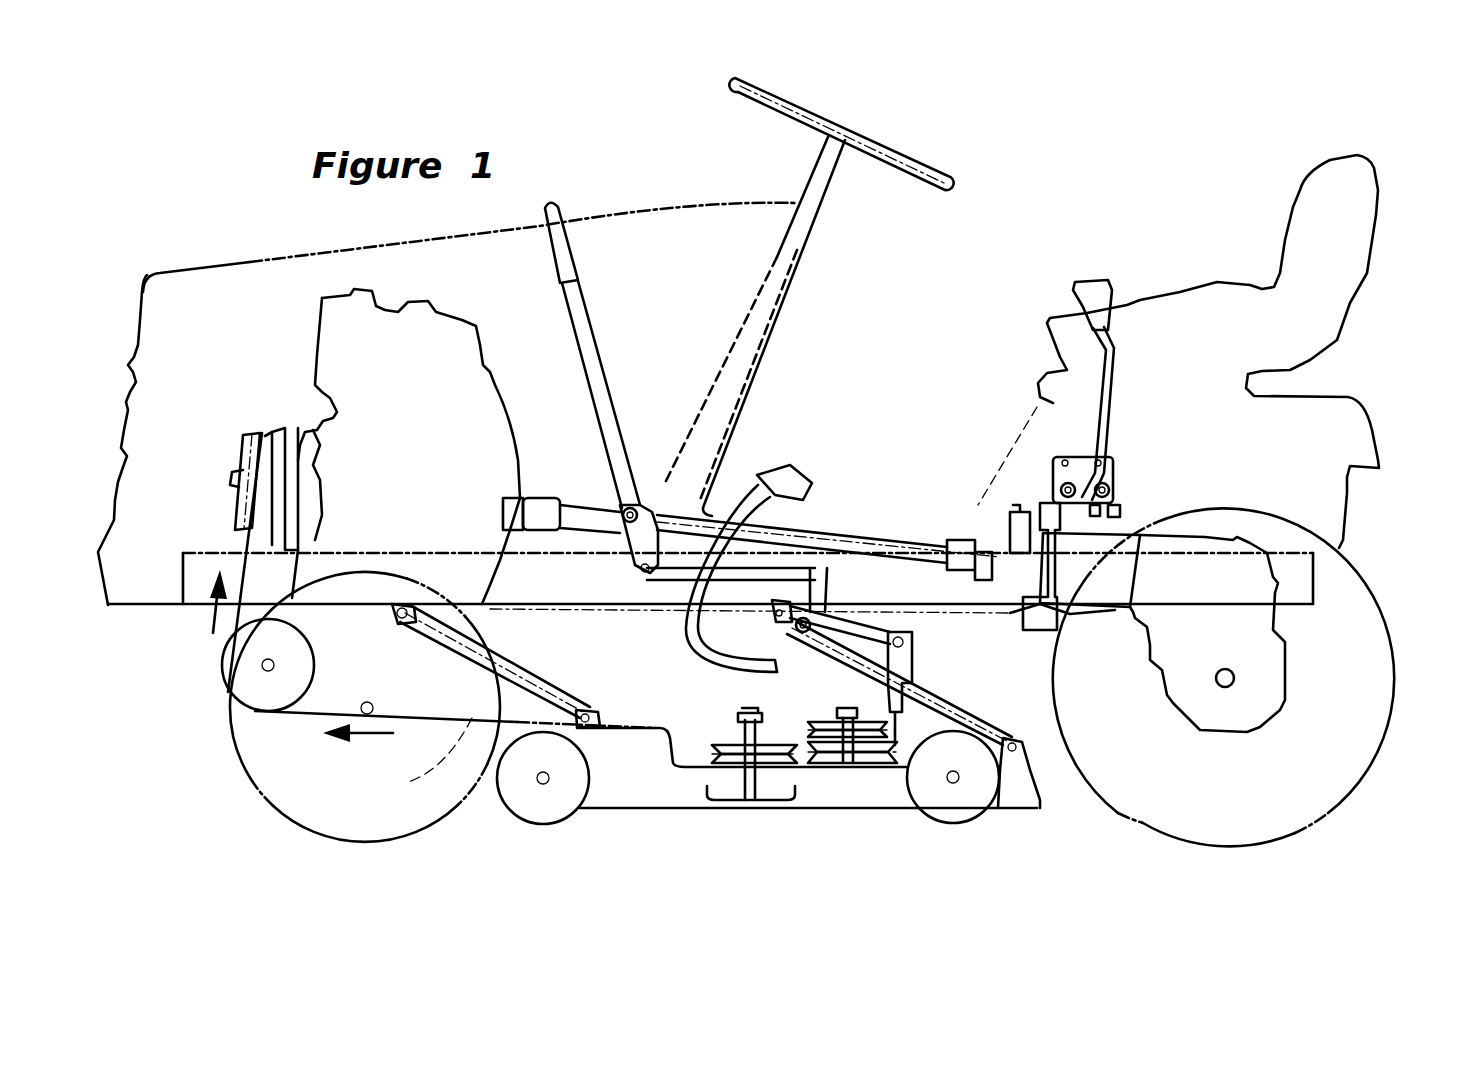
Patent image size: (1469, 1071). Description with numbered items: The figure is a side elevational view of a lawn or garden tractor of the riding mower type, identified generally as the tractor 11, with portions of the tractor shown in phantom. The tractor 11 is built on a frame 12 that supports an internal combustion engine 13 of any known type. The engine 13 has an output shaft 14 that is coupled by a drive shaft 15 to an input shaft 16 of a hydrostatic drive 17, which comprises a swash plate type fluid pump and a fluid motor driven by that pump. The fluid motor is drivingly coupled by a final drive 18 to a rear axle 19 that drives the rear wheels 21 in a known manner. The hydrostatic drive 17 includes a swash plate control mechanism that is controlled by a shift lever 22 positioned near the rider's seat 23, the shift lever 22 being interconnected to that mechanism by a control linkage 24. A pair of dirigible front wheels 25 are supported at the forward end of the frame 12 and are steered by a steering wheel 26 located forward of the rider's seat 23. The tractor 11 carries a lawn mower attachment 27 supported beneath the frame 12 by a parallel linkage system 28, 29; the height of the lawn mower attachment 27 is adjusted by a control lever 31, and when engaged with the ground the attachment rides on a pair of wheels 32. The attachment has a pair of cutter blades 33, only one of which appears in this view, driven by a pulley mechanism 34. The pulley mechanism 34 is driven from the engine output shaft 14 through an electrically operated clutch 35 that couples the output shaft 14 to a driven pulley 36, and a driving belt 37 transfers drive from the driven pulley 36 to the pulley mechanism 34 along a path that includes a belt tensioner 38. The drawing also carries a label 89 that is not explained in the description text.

The tractor 11 is at (243, 245).
The frame 12 is at (183, 585).
The internal combustion engine 13 is at (316, 370).
The output shaft 14 is at (515, 497).
The drive shaft 15 is at (835, 532).
The input shaft 16 is at (990, 547).
The hydrostatic drive 17 is at (1112, 610).
The final drive 18 is at (1165, 660).
The rear axle 19 is at (1237, 680).
The rear wheels 21 is at (1392, 645).
The shift lever 22 is at (1120, 402).
The rider's seat 23 is at (1210, 283).
The control linkage 24 is at (1042, 455).
The front wheels 25 is at (290, 822).
The steering wheel 26 is at (872, 163).
The lawn mower attachment 27 is at (672, 815).
The parallel linkage system 28 is at (538, 676).
The parallel linkage system 29 is at (994, 705).
The control lever 31 is at (628, 362).
The wheels 32 is at (540, 810).
The cutter blades 33 is at (752, 805).
The pulley mechanism 34 is at (830, 722).
The electrically operated clutch 35 is at (287, 425).
The driven pulley 36 is at (238, 460).
The driving belt 37 is at (420, 765).
The belt tensioner 38 is at (225, 680).
The control cable 89 is at (807, 472).